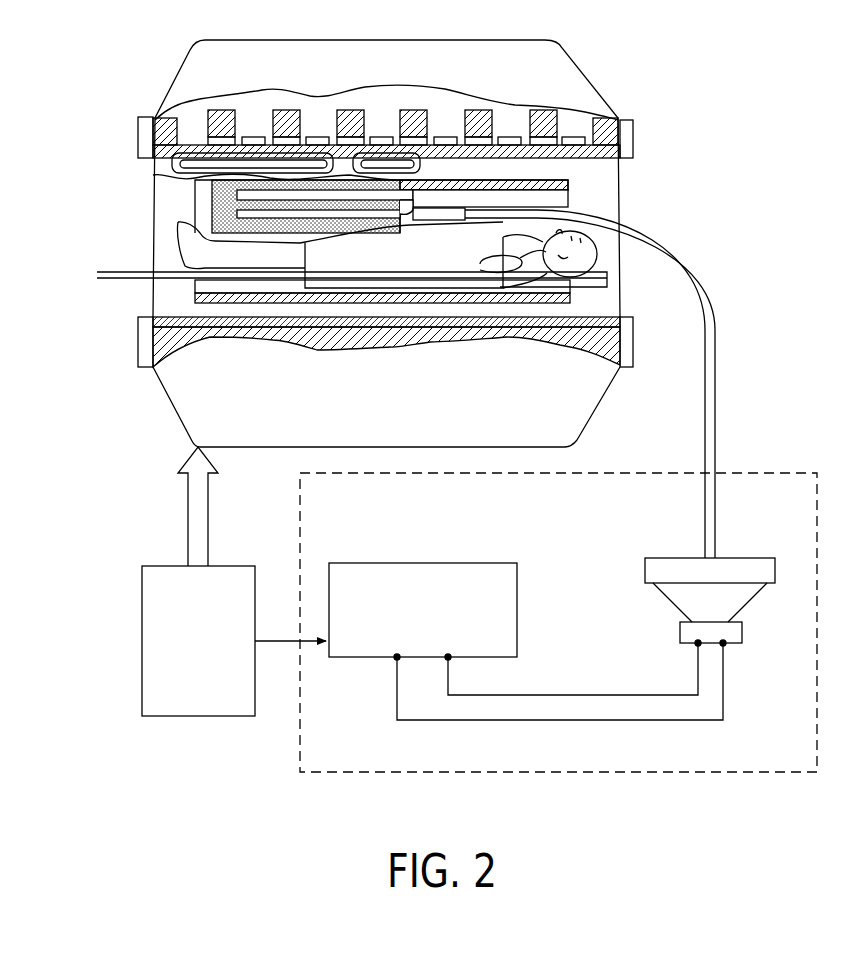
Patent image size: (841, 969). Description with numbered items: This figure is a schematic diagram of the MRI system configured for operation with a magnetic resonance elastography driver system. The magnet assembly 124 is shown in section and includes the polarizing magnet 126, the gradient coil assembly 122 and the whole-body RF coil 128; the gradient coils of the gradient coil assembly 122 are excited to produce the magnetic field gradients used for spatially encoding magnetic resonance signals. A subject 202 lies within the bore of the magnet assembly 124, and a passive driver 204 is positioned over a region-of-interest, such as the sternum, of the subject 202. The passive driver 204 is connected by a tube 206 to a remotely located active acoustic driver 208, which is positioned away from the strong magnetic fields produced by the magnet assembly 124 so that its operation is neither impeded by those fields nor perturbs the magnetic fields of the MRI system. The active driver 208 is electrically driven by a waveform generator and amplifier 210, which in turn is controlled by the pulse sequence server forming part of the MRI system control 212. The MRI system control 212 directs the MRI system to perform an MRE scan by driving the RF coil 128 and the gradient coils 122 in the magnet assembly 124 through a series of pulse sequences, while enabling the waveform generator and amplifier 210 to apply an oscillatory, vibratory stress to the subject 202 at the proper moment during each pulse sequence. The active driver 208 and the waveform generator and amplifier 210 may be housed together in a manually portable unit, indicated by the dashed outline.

The gradient coil assembly 122 is at (161, 156).
The magnet assembly 124 is at (166, 67).
The polarizing magnet 126 is at (340, 110).
The whole-body RF coil 128 is at (535, 193).
The subject 202 is at (424, 253).
The passive driver 204 is at (440, 207).
The tube 206 is at (684, 262).
The active acoustic driver 208 is at (633, 563).
The waveform generator and amplifier 210 is at (423, 563).
The MRI system control 212 is at (142, 641).